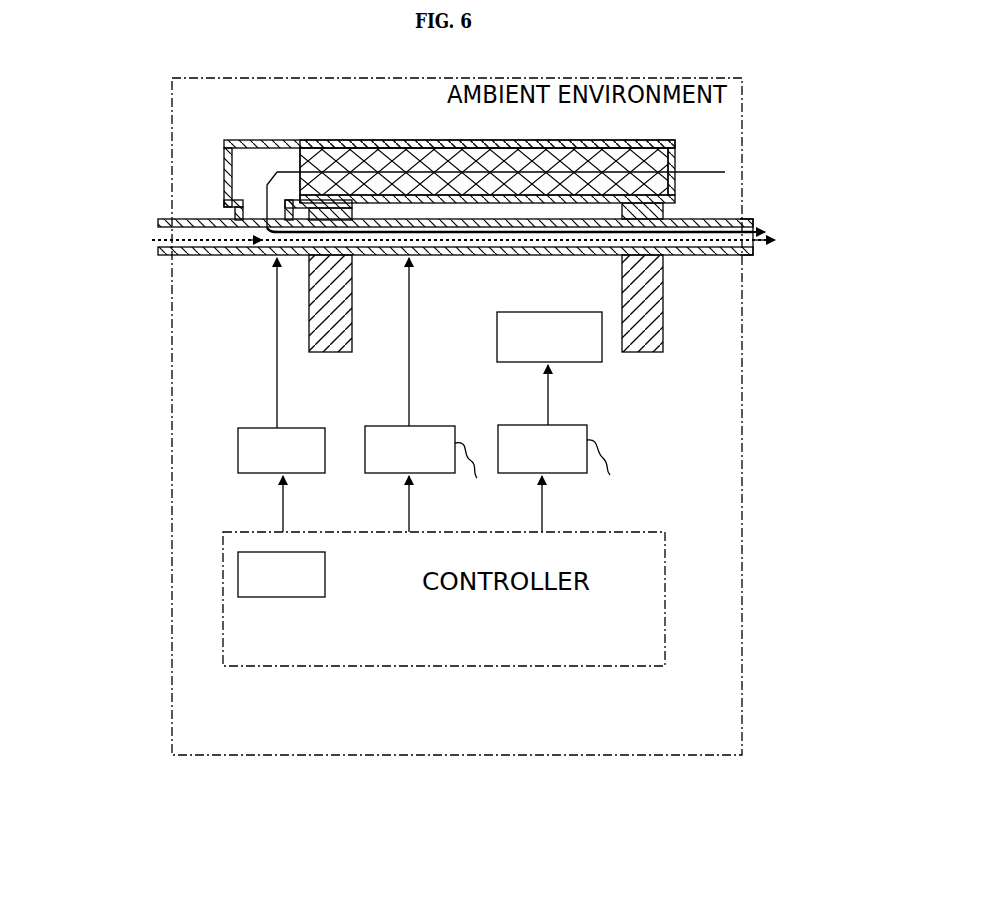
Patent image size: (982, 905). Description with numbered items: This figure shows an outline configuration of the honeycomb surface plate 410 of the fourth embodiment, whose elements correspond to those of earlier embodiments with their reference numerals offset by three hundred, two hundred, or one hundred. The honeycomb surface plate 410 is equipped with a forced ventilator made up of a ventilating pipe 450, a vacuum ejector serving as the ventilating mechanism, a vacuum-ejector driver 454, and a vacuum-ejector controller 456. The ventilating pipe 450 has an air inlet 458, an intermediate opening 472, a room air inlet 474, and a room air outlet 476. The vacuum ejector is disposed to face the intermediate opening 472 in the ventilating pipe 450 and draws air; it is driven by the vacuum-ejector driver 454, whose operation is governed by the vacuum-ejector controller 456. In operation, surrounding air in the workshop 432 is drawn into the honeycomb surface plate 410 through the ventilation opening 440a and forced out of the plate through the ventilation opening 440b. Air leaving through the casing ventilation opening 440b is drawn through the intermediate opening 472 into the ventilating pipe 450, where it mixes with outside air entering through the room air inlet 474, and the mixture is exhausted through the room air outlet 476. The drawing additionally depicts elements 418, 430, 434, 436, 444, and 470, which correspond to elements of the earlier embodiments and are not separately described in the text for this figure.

The honeycomb surface plate 410 is at (437, 140).
The heater line 418 is at (702, 170).
The computer 430 is at (603, 667).
The workshop 432 is at (262, 755).
The temperature regulator 434 is at (573, 362).
The ventilation driver 436 is at (523, 425).
The ventilation opening 440a is at (673, 175).
The ventilation opening 440b is at (317, 148).
The shutter driver 444 is at (430, 426).
The ventilating pipe 450 is at (223, 168).
The vacuum-ejector driver 454 is at (250, 428).
The vacuum-ejector controller 456 is at (325, 577).
The air inlet 458 is at (297, 148).
The pedestal 470 is at (352, 311).
The intermediate opening 472 is at (250, 198).
The room air inlet 474 is at (172, 231).
The room air outlet 476 is at (747, 218).